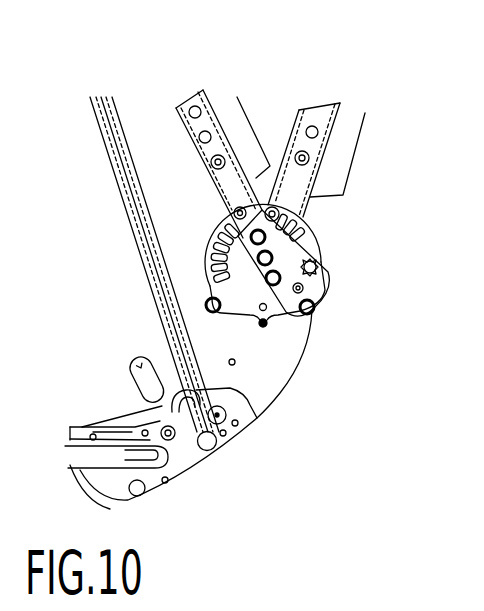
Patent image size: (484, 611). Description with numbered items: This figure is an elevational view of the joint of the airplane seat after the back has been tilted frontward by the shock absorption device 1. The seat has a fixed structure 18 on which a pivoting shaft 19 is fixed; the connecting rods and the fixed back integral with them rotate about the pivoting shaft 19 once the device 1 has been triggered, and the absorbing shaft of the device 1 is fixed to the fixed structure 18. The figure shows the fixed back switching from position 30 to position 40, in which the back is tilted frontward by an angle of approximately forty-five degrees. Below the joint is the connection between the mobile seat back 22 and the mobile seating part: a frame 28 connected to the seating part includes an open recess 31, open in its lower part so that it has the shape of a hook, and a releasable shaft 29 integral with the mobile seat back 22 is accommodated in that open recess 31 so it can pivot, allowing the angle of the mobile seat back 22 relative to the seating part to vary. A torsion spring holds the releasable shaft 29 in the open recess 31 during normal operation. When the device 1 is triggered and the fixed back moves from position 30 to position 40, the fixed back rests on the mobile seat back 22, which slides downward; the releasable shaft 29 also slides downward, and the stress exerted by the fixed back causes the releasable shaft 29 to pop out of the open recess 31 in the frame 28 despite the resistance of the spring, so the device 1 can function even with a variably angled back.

The shock absorption device 1 is at (330, 254).
The fixed structure 18 is at (277, 357).
The pivoting shaft 19 is at (322, 226).
The mobile seat back 22 is at (126, 200).
The frame 28 is at (82, 440).
The releasable shaft 29 is at (218, 450).
The position of the fixed back 30 is at (305, 112).
The open recess 31 is at (256, 421).
The position of the fixed back 40 is at (214, 116).